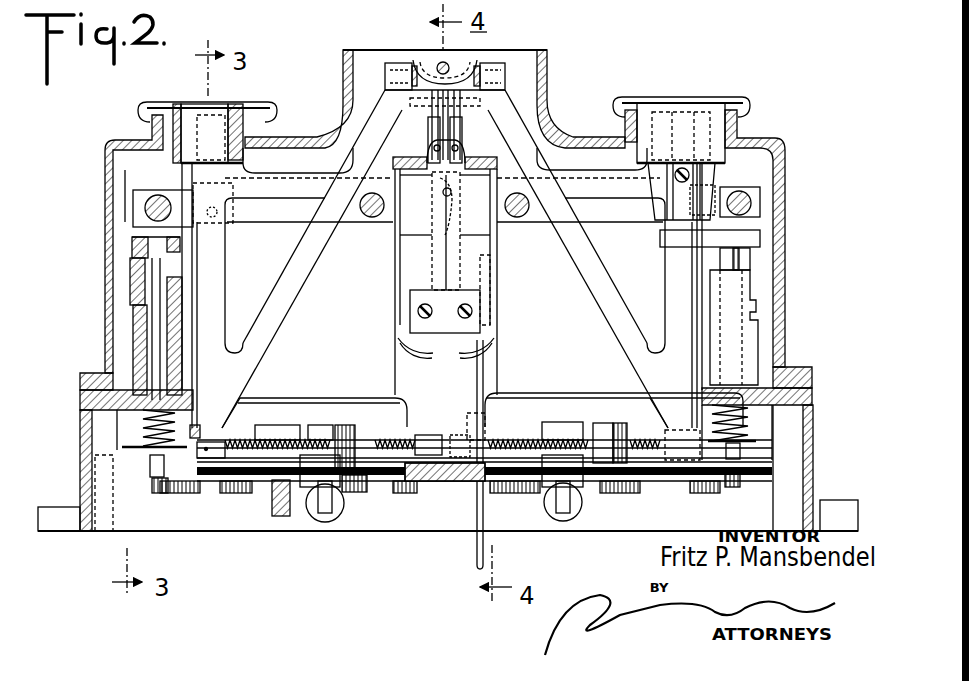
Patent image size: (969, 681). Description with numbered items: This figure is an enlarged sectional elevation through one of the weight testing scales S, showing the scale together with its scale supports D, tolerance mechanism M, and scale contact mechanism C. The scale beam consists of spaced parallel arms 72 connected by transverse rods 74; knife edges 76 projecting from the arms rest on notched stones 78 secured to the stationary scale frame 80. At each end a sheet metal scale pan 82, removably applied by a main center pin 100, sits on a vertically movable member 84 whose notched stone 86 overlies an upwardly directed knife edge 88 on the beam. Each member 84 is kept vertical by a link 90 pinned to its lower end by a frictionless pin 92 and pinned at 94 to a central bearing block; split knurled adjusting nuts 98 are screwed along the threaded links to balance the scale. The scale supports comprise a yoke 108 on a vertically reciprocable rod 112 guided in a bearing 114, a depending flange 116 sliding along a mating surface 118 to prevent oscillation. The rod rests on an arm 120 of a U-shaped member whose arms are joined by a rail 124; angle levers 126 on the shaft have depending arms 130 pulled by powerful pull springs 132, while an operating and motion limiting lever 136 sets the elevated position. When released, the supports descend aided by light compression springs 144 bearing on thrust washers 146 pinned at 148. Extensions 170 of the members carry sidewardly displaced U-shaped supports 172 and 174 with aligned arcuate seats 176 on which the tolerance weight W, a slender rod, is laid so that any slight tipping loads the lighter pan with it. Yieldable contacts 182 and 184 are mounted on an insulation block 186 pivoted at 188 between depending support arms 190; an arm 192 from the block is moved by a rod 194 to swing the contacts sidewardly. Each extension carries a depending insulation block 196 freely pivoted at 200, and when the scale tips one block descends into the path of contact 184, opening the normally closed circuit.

The tolerance weight W is at (437, 64).
The tolerance mechanism M is at (470, 70).
The weight testing scale S is at (598, 104).
The scale contact mechanism C is at (400, 240).
The scale support D is at (130, 268).
The arms of scale beam 72 is at (358, 223).
The transverse rods 74 is at (145, 205).
The knife edges 76 is at (450, 191).
The notched jewels or stones 78 is at (450, 207).
The scale frame 80 is at (488, 363).
The scale pan 82 is at (252, 102).
The vertically movable member 84 is at (212, 284).
The notched jewels or stones 86 is at (252, 170).
The knife edges 88 is at (240, 225).
The links 90 is at (250, 487).
The pins 92 is at (208, 452).
The pins 94 is at (430, 460).
The split knurled adjusting nuts 98 is at (432, 434).
The main center pin 100 is at (210, 128).
The yoke 108 is at (132, 245).
The rod 112 is at (155, 356).
The bearing 114 is at (135, 340).
The depending flange 116 is at (752, 291).
The mating surface 118 is at (758, 306).
The arm 120 is at (165, 487).
The rail 124 is at (406, 483).
The angle levers 126 is at (312, 422).
The vertically depending arms 130 is at (336, 514).
The pull springs 132 is at (322, 522).
The operating and motion limiting lever 136 is at (278, 519).
The compression springs 144 is at (150, 431).
The thrust washers 146 is at (148, 447).
The pins 148 is at (158, 478).
The extensions 170 is at (330, 208).
The U-shaped support 172 is at (433, 76).
The U-shaped support 174 is at (475, 75).
The arcuate seats 176 is at (452, 70).
The electrical contact 182 is at (428, 154).
The electrical contact 184 is at (447, 356).
The insulation block 186 is at (412, 326).
The pivot 188 is at (487, 310).
The depending support arms 190 is at (395, 266).
The arm 192 is at (492, 258).
The rod 194 is at (475, 556).
The insulation block or abutment 196 is at (432, 128).
The pivot 200 is at (462, 128).